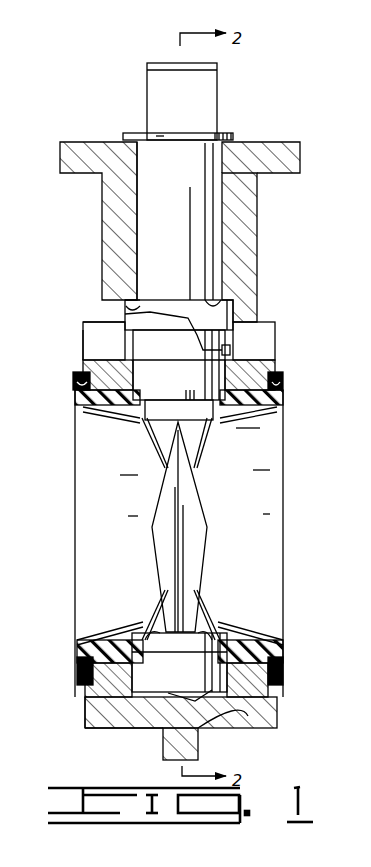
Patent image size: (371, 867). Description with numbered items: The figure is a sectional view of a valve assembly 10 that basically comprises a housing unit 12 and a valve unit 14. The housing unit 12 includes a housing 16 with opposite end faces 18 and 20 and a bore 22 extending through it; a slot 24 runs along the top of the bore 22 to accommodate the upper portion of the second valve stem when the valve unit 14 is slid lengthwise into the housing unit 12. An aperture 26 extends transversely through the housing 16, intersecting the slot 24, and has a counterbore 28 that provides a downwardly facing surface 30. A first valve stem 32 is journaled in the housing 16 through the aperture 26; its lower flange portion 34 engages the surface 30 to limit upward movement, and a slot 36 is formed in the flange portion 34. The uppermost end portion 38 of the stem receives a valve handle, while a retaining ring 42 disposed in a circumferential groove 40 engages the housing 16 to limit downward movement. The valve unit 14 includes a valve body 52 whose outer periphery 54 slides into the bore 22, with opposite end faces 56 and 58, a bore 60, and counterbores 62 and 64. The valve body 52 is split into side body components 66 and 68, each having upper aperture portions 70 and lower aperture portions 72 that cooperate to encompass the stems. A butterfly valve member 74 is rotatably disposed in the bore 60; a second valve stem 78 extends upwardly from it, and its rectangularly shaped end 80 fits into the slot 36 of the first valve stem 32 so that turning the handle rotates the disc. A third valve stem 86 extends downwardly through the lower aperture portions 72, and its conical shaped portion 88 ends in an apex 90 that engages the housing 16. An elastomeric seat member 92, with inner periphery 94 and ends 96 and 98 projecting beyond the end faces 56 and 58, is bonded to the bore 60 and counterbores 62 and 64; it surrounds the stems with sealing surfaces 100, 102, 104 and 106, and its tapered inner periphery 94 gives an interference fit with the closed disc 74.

The valve assembly 10 is at (252, 116).
The housing unit 12 is at (264, 220).
The valve unit 14 is at (279, 364).
The housing 16 is at (240, 194).
The end face 18 is at (85, 718).
The end face 20 is at (278, 715).
The bore 22 is at (102, 732).
The slot 24 is at (103, 328).
The aperture 26 is at (137, 186).
The counterbore 28 is at (140, 303).
The downwardly facing surface 30 is at (213, 306).
The first valve stem 32 is at (203, 173).
The lower flange portion 34 is at (212, 327).
The slot 36 is at (128, 327).
The uppermost end portion 38 is at (205, 82).
The circumferential groove 40 is at (160, 135).
The retaining ring 42 is at (123, 135).
The valve body 52 is at (252, 675).
The outer periphery 54 is at (250, 717).
The end face 56 is at (86, 697).
The end face 58 is at (278, 690).
The bore 60 is at (117, 653).
The counterbore 62 is at (86, 693).
The counterbore 64 is at (280, 387).
The side body component 66 is at (82, 403).
The side body component 68 is at (262, 410).
The upper aperture portion 70 is at (140, 428).
The lower aperture portion 72 is at (152, 622).
The butterfly valve member 74 is at (197, 541).
The second valve stem 78 is at (208, 448).
The rectangularly shaped end 80 is at (168, 347).
The third valve stem 86 is at (208, 640).
The conical shaped portion 88 is at (156, 728).
The apex 90 is at (199, 729).
The elastomeric seat member 92 is at (267, 643).
The inner periphery 94 is at (95, 414).
The end 96 is at (75, 378).
The end 98 is at (284, 392).
The sealing surface 100 is at (224, 353).
The sealing surface 102 is at (158, 440).
The sealing surface 104 is at (220, 618).
The sealing surface 106 is at (152, 632).